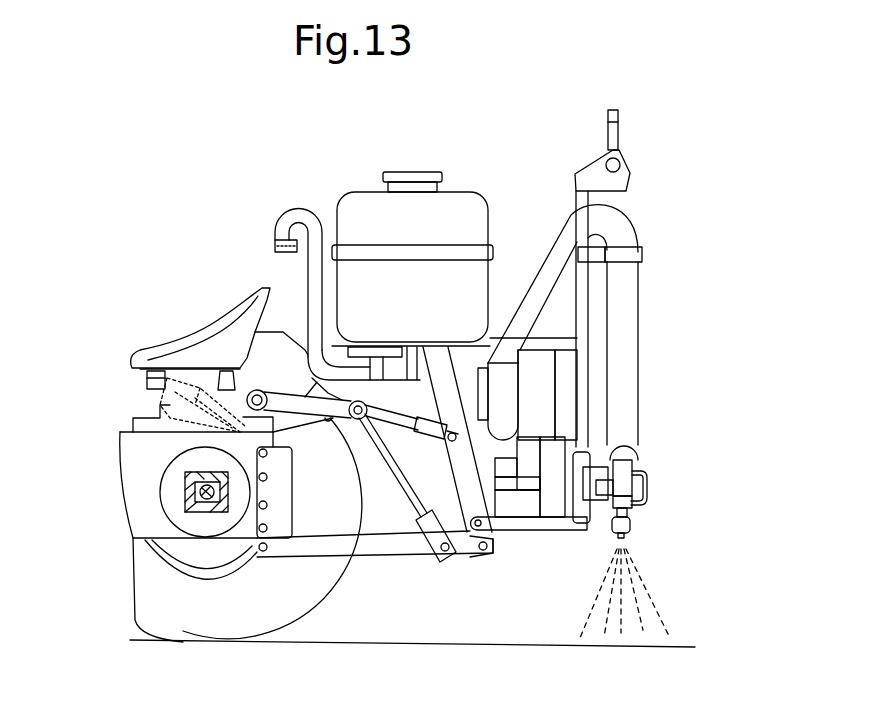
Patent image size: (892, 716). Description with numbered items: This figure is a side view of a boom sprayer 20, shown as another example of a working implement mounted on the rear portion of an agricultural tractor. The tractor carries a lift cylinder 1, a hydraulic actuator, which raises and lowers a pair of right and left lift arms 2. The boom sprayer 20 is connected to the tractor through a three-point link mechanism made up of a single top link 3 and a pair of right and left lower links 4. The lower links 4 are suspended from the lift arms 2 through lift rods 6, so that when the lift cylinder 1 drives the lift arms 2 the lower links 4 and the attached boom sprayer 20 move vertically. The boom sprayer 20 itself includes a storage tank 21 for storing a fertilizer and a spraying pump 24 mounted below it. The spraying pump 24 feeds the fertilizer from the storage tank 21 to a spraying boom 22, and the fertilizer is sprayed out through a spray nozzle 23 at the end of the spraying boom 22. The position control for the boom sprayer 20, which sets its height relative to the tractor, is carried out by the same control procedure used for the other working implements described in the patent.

The lift cylinder 1 is at (157, 412).
The lift arms 2 is at (290, 403).
The top link 3 is at (385, 425).
The lower links 4 is at (393, 547).
The lift rods 6 is at (400, 487).
The boom sprayer 20 is at (520, 190).
The storage tank 21 is at (352, 200).
The spraying boom 22 is at (630, 526).
The spray nozzle 23 is at (627, 540).
The spraying pump 24 is at (518, 512).